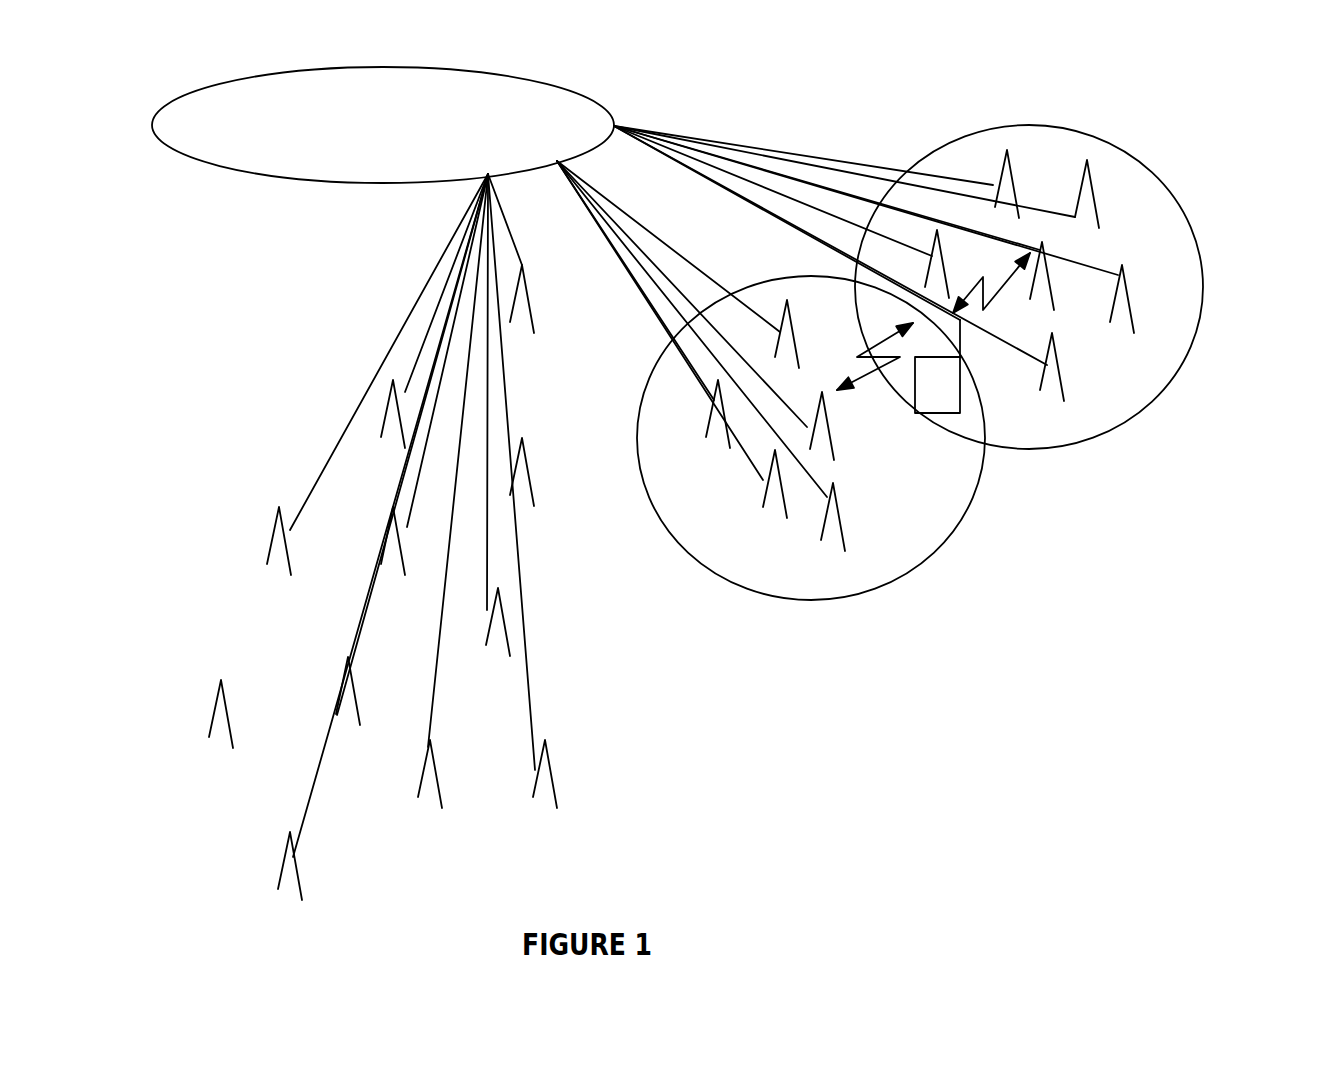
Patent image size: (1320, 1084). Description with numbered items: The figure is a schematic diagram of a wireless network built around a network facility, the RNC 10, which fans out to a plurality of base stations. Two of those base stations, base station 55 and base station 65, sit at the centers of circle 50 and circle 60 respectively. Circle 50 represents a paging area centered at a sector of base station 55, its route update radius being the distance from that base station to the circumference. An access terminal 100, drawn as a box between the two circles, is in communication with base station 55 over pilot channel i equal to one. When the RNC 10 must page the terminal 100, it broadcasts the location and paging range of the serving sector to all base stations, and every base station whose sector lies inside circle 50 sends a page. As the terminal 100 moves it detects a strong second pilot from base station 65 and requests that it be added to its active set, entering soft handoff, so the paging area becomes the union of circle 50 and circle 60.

The RNC 10 is at (220, 172).
The circle 50 is at (1190, 357).
The base station 55 is at (1052, 265).
The circle 60 is at (880, 600).
The base station 65 is at (834, 460).
The access terminal 100 is at (960, 413).